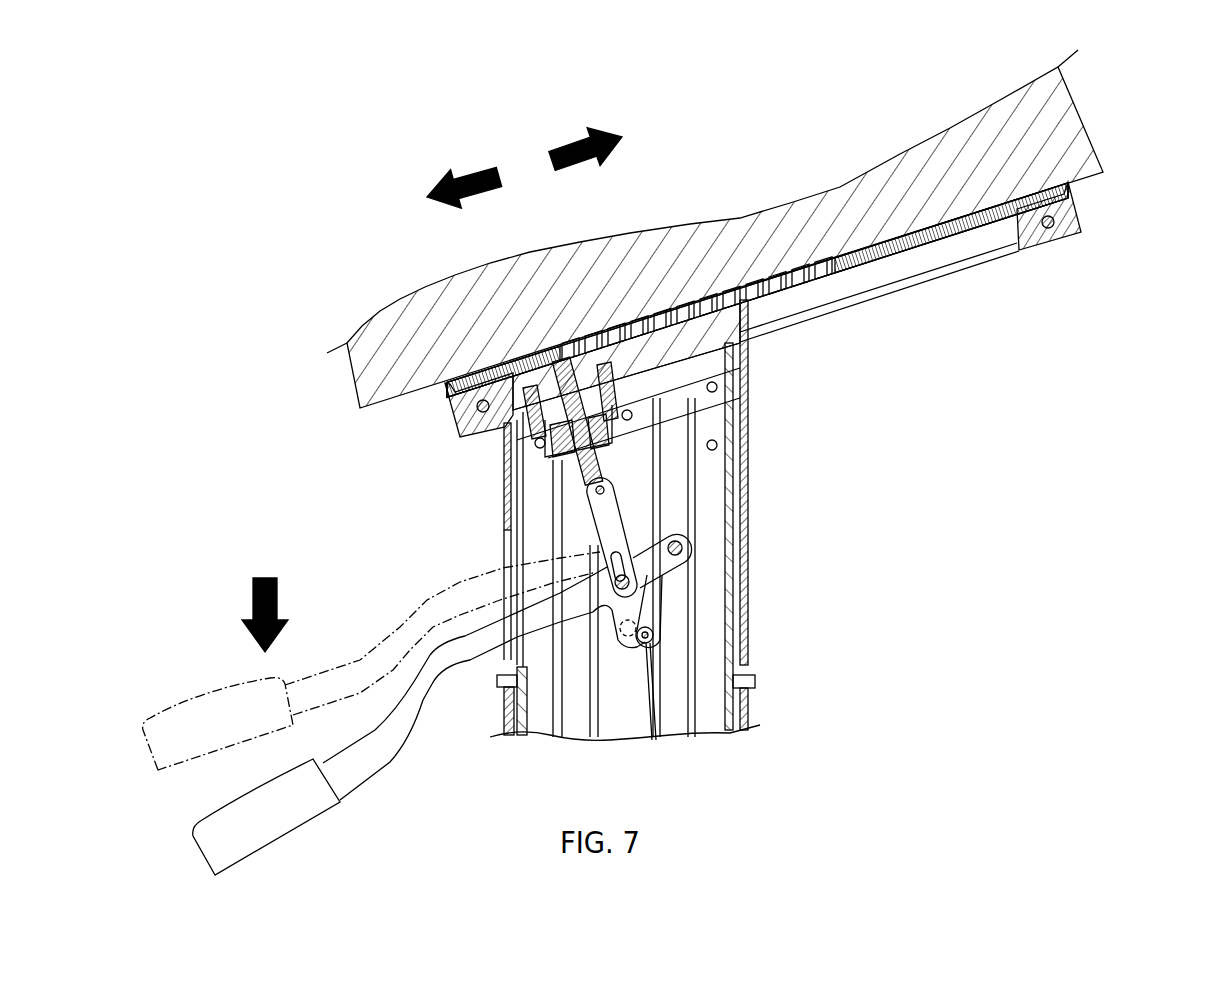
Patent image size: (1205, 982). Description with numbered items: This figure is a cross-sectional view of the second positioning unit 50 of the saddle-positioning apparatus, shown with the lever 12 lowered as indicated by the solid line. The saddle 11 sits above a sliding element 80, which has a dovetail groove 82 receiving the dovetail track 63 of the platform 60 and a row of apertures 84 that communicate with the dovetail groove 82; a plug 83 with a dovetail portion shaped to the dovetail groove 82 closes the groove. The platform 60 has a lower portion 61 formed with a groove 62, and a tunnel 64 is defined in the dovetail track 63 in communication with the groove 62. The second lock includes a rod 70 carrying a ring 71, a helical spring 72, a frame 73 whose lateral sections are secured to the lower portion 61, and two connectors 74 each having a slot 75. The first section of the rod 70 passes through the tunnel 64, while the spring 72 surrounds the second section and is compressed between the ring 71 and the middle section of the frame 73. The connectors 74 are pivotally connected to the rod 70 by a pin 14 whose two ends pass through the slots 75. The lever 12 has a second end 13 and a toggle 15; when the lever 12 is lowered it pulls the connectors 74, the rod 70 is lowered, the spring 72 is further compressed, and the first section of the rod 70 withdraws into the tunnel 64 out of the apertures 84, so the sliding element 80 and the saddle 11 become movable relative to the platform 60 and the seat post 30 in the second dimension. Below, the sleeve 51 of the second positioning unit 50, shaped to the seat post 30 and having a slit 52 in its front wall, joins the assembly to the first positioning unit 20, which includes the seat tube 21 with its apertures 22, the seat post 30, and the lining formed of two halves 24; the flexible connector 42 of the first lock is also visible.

The saddle 11 is at (1073, 147).
The lever 12 is at (413, 760).
The second end 13 is at (690, 548).
The pin 14 is at (668, 605).
The toggle 15 is at (640, 648).
The first positioning unit 20 is at (792, 720).
The seat tube 21 is at (745, 712).
The apertures 22 is at (497, 737).
The halves 24 is at (747, 680).
The seat post 30 is at (728, 735).
The flexible connector 42 is at (653, 740).
The second positioning unit 50 is at (353, 428).
The sleeve 51 is at (515, 532).
The slit 52 is at (510, 565).
The platform 60 is at (392, 488).
The lower portion 61 is at (510, 517).
The groove 62 is at (727, 378).
The dovetail track 63 is at (512, 470).
The tunnel 64 is at (643, 392).
The rod 70 is at (530, 430).
The ring 71 is at (610, 420).
The spring 72 is at (690, 440).
The frame 73 is at (612, 447).
The connectors 74 is at (625, 525).
The slot 75 is at (640, 583).
The sliding element 80 is at (438, 403).
The dovetail groove 82 is at (937, 252).
The plug 83 is at (1073, 237).
The apertures 84 is at (838, 266).